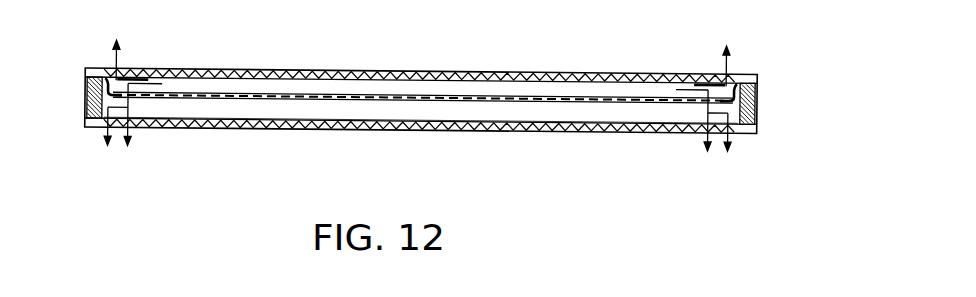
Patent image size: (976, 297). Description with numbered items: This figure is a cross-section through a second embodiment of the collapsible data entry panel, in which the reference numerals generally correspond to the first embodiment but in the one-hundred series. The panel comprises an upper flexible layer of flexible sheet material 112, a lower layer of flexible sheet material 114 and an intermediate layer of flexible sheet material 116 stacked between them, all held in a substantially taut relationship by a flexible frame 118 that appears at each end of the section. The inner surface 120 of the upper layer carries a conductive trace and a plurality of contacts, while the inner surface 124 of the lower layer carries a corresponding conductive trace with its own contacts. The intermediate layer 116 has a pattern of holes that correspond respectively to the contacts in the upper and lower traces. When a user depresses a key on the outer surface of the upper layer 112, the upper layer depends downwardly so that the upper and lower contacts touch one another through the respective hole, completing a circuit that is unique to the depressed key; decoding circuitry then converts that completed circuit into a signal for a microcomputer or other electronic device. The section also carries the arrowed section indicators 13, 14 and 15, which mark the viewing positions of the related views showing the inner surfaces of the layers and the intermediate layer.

The fluid flow out of upper fluid passage 13 is at (423, 48).
The fluid flow into lower fluid passage 14 is at (417, 134).
The fluid flow through side passage 15 is at (413, 146).
The upper flexible layer of flexible sheet material 112 is at (455, 72).
The lower layer of flexible sheet material 114 is at (453, 130).
The intermediate layer of flexible sheet material 116 is at (542, 93).
The flexible frame 118 is at (85, 70).
The inner surface of the upper layer 120 is at (330, 88).
The inner surface of the lower layer 124 is at (340, 112).